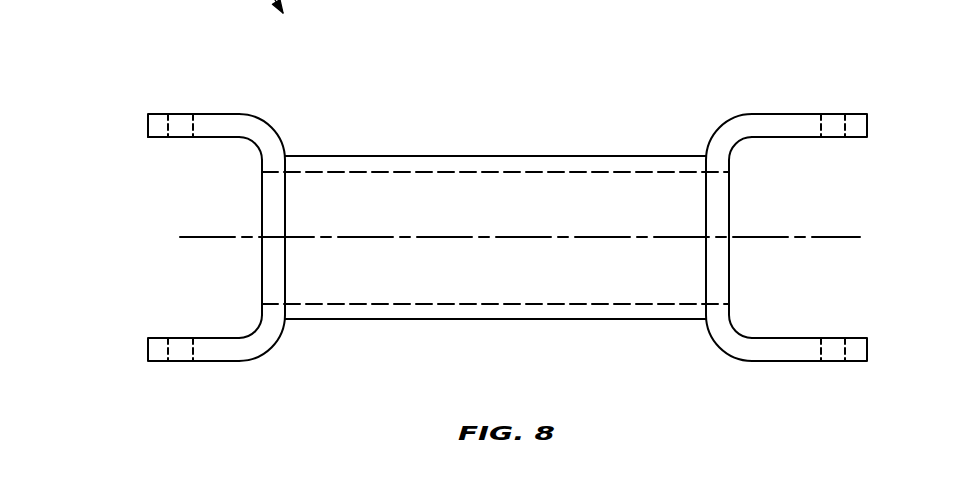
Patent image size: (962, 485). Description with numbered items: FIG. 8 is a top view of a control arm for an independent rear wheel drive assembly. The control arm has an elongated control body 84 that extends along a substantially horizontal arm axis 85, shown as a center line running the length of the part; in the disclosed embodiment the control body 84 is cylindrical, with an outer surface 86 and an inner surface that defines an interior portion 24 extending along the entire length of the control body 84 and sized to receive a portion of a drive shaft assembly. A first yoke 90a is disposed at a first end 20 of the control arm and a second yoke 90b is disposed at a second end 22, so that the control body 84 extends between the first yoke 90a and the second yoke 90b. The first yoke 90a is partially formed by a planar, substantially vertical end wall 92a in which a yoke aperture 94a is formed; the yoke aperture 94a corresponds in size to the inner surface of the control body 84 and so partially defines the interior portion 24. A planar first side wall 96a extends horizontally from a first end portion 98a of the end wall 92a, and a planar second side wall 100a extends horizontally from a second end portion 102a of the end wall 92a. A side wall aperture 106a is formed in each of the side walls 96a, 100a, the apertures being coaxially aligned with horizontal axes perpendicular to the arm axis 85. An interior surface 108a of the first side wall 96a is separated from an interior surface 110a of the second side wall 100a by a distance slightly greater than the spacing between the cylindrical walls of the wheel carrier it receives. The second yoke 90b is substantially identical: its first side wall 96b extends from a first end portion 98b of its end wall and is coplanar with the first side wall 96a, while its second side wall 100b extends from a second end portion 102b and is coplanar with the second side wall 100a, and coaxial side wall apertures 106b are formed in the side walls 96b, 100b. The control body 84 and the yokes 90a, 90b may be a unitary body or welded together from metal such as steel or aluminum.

The first end 20 is at (265, 83).
The second end 22 is at (706, 82).
The interior portion 24 is at (575, 200).
The control body 84 is at (421, 155).
The arm axis 85 is at (805, 235).
The outer surface 86 is at (500, 155).
The first yoke 90a is at (130, 148).
The second yoke 90b is at (885, 140).
The end wall 92a is at (255, 153).
The yoke aperture 94a is at (262, 267).
The first side wall 96a is at (232, 353).
The first side wall 96b is at (783, 352).
The first end portion 98a is at (285, 320).
The first end portion 98b is at (706, 320).
The second side wall 100a is at (227, 125).
The second side wall 100b is at (793, 123).
The second end portion 102a is at (285, 156).
The second end portion 102b is at (706, 156).
The side wall aperture 106a is at (181, 120).
The side wall aperture 106b is at (832, 123).
The interior surface 108a is at (215, 336).
The interior surface 110a is at (217, 140).